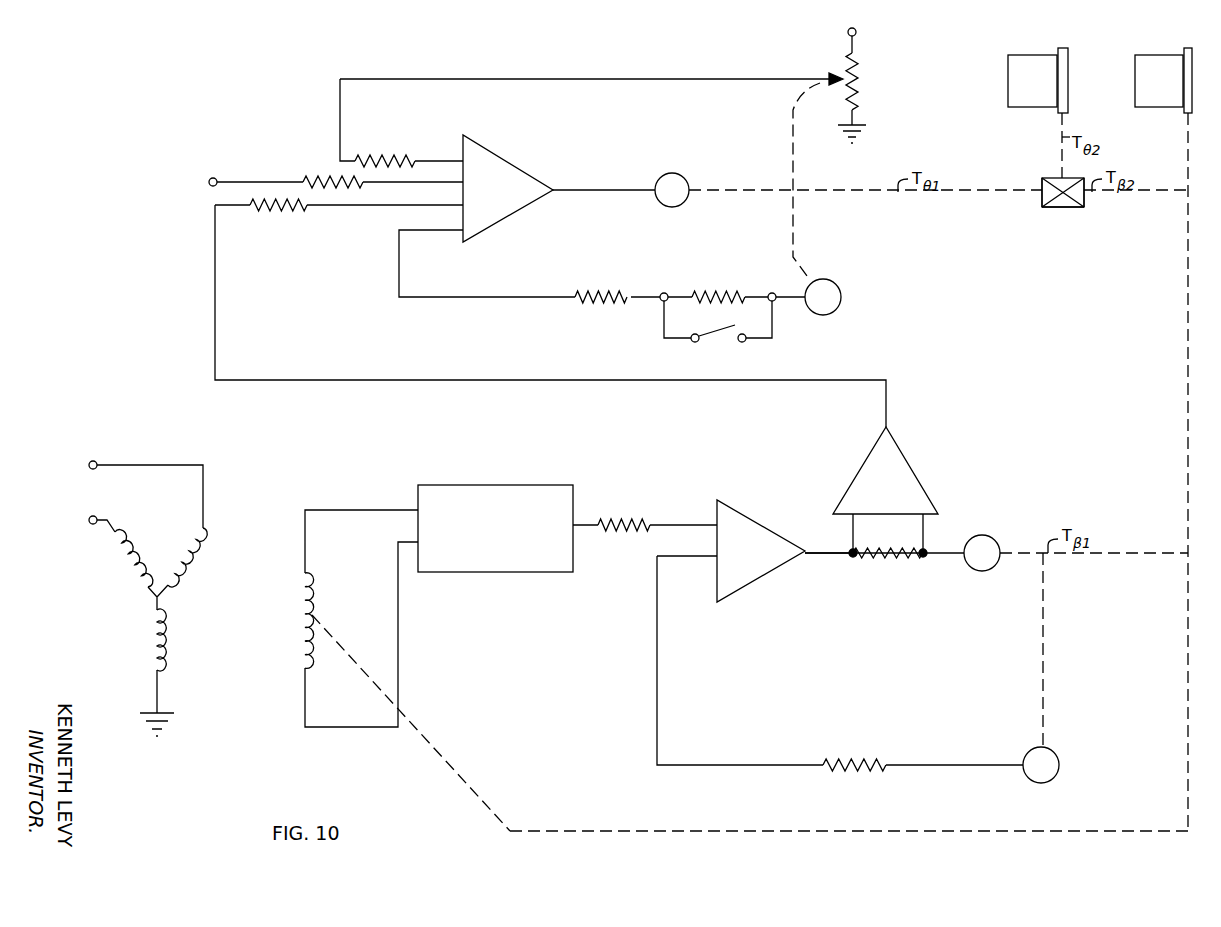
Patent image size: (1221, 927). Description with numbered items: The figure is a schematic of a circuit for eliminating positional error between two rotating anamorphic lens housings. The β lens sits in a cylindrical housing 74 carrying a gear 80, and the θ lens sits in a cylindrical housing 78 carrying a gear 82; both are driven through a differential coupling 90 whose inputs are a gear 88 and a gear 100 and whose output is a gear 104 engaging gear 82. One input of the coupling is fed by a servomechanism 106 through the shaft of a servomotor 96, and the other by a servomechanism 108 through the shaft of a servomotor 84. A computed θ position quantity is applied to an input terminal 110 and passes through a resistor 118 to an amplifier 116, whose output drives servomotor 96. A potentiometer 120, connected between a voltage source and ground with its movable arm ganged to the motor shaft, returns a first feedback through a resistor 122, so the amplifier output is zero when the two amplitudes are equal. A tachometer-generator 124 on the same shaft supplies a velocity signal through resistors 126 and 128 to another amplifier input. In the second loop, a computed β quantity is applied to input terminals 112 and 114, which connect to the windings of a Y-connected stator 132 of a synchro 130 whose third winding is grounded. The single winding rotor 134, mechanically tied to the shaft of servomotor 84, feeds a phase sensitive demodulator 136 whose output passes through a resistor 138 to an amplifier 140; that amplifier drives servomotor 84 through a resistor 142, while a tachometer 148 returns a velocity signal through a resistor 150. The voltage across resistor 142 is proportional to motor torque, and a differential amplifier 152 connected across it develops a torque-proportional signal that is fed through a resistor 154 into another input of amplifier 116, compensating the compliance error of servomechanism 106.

The cylindrical housing 74 is at (1160, 55).
The cylindrical housing 78 is at (1032, 55).
The gear 80 is at (1192, 48).
The gear 82 is at (1064, 48).
The servomotor 84 is at (976, 535).
The gear 88 is at (1088, 202).
The differential coupling 90 is at (1064, 214).
The servomotor 96 is at (680, 174).
The gear 100 is at (1041, 202).
The gear 104 is at (1052, 178).
The servomechanism 106 is at (609, 57).
The servomechanism 108 is at (706, 478).
The input terminal 110 is at (196, 184).
The input terminal 112 is at (87, 466).
The input terminal 114 is at (87, 521).
The amplifier 116 is at (488, 152).
The resistor 118 is at (319, 175).
The potentiometer 120 is at (860, 78).
The resistor 122 is at (380, 158).
The tachometer-generator 124 is at (841, 297).
The resistor 126 is at (725, 278).
The resistor 128 is at (602, 278).
The synchro 130 is at (249, 643).
The Y-connected stator 132 is at (90, 628).
The single winding rotor 134 is at (381, 628).
The phase sensitive demodulator 136 is at (446, 485).
The resistor 138 is at (613, 521).
The amplifier 140 is at (742, 517).
The resistor 142 is at (878, 560).
The tachometer 148 is at (1050, 782).
The resistor 150 is at (850, 772).
The differential amplifier 152 is at (905, 458).
The resistor 154 is at (268, 210).